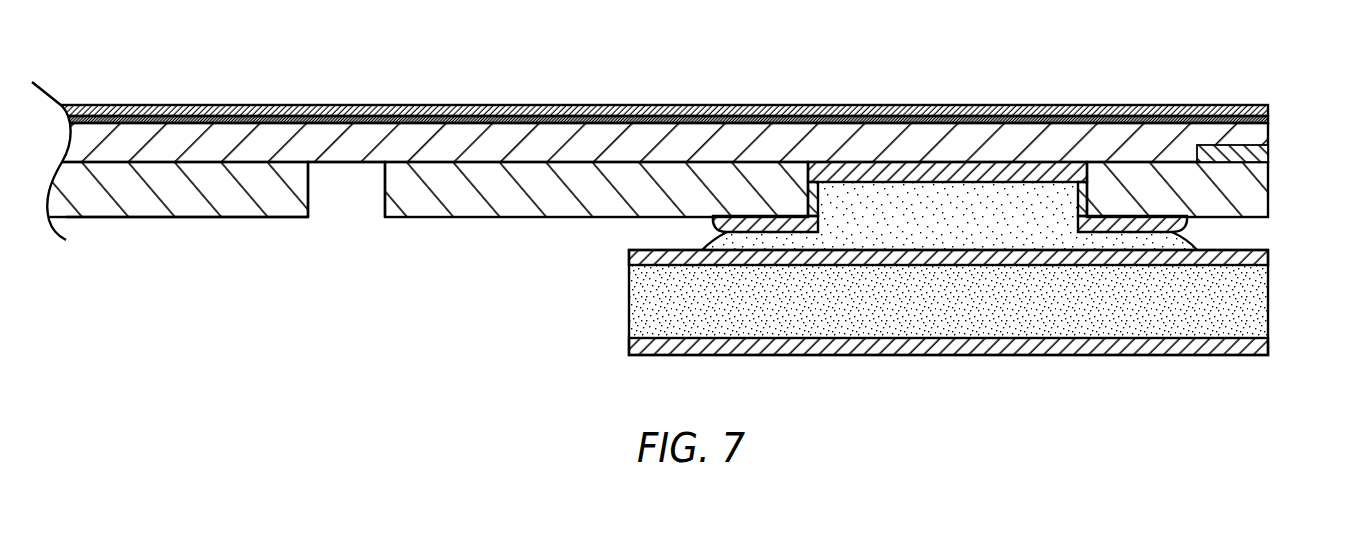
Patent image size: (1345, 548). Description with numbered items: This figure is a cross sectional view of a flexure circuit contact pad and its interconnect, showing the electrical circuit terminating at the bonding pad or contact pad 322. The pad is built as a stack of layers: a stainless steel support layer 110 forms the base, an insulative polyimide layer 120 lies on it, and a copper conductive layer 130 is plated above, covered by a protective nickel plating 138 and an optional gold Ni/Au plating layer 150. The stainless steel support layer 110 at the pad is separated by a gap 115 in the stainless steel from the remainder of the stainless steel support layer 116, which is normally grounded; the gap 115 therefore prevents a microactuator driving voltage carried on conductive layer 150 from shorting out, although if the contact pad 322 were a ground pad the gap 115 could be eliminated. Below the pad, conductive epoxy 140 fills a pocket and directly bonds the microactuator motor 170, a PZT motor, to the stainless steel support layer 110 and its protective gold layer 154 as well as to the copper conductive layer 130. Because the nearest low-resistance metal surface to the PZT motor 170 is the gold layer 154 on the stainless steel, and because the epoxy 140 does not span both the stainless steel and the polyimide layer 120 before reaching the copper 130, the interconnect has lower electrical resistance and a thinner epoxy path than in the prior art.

The contact pad 322 is at (679, 155).
The Ni/Au plating layer 150 is at (1222, 104).
The nickel plating 138 is at (1269, 116).
The copper conductive layer 130 is at (1269, 133).
The polyimide insulative layer 120 is at (1269, 152).
The stainless steel support layer 110 is at (1269, 186).
The gap 115 is at (348, 190).
The remainder of stainless steel support layer 116 is at (233, 217).
The conductive epoxy 140 is at (900, 213).
The gold layer 154 is at (973, 173).
The microactuator motor 170 is at (1284, 308).